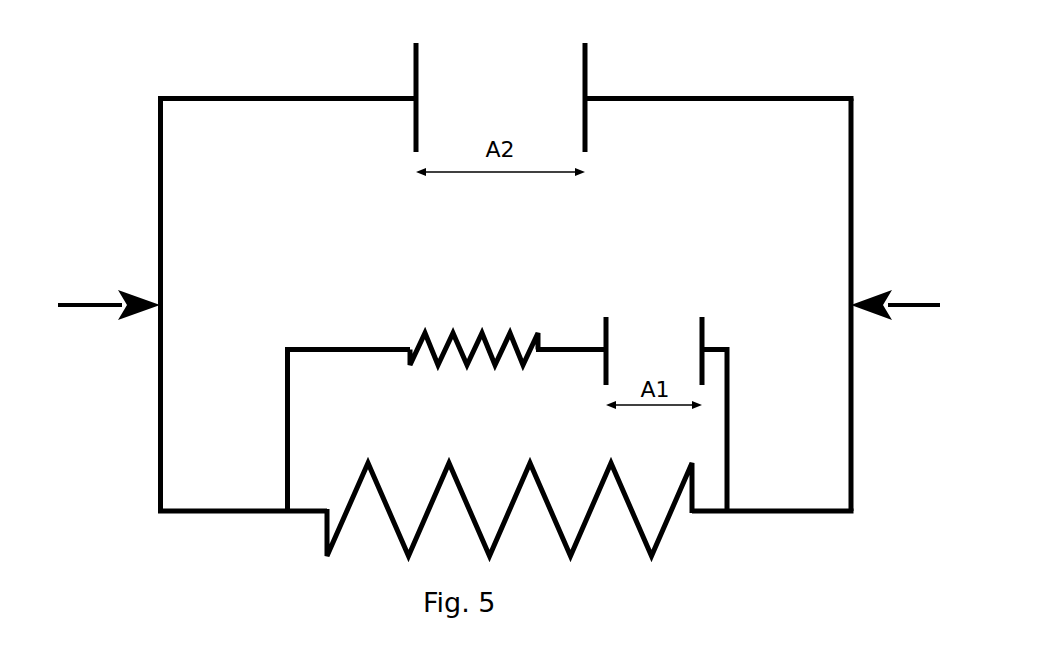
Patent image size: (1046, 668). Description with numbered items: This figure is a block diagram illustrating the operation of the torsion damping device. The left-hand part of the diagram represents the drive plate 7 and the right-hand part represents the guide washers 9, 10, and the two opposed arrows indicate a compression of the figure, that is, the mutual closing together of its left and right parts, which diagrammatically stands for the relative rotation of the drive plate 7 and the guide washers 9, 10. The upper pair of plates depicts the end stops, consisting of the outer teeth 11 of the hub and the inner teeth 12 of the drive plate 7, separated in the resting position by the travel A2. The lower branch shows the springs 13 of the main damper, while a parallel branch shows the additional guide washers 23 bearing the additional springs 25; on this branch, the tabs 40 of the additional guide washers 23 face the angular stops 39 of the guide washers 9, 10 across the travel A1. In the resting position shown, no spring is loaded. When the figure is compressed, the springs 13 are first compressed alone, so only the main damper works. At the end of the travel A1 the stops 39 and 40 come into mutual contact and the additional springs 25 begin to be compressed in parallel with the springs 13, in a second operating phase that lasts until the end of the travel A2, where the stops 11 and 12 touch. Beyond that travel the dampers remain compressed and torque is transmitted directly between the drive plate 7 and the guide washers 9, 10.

The drive plate 7 is at (158, 223).
The guide washer 9 is at (887, 305).
The guide washer 10 is at (853, 185).
The outer teeth 11 is at (587, 66).
The inner teeth 12 is at (414, 74).
The springs 13 is at (580, 540).
The additional guide washers 23 is at (563, 348).
The additional springs 25 is at (509, 330).
The angular stops 39 is at (704, 327).
The tabs 40 is at (604, 328).